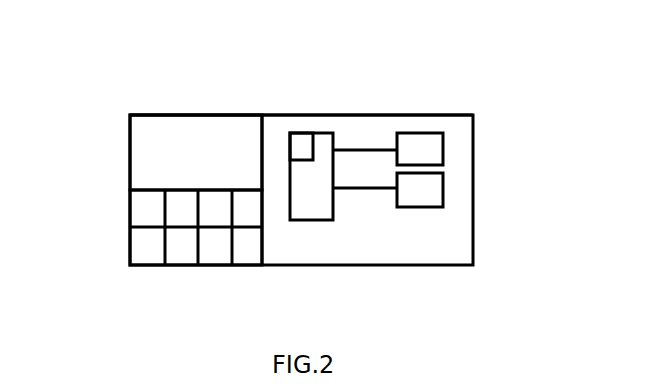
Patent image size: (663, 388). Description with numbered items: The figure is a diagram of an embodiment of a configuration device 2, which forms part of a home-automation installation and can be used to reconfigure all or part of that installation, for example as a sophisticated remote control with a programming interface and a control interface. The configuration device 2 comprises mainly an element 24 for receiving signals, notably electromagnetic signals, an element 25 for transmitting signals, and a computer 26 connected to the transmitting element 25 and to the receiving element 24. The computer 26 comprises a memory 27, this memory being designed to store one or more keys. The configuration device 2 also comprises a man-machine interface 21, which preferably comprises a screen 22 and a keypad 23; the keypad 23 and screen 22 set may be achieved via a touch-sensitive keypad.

The configuration device 2 is at (482, 140).
The man-machine interface 21 is at (184, 113).
The screen 22 is at (145, 149).
The keypad 23 is at (143, 255).
The element for receiving signals 24 is at (418, 133).
The element for transmitting signals 25 is at (443, 185).
The computer 26 is at (322, 140).
The memory 27 is at (302, 138).